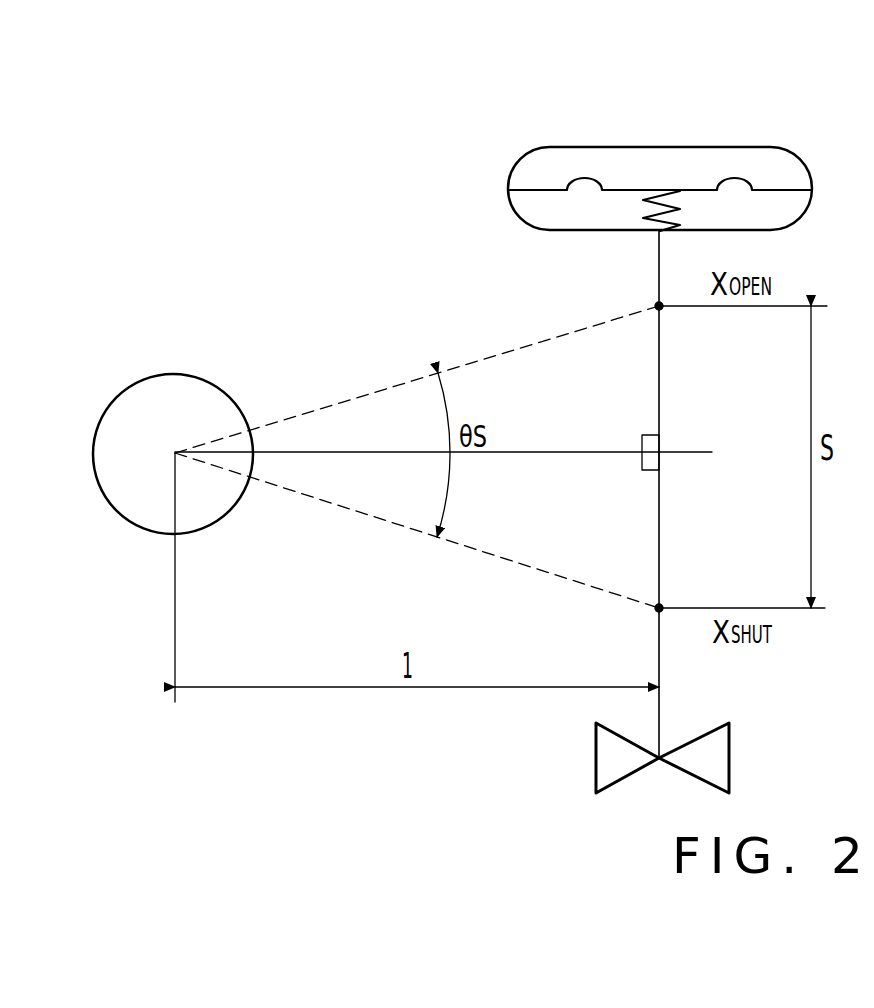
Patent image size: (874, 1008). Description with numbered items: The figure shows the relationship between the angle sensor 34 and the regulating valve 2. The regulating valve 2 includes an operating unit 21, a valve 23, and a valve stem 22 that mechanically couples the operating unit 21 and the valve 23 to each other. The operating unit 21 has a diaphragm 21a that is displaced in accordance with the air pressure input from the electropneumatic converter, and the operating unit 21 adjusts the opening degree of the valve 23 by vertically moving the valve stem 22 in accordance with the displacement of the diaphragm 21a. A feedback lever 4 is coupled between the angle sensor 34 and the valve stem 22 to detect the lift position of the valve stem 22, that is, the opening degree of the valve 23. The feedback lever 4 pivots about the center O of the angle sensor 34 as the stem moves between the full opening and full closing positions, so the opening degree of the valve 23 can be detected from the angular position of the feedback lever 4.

The regulating valve 2 is at (707, 105).
The operating unit 21 is at (766, 147).
The diaphragm 21a is at (623, 190).
The valve stem 22 is at (659, 363).
The valve 23 is at (730, 752).
The angle sensor 34 is at (197, 375).
The feedback lever 4 is at (565, 452).